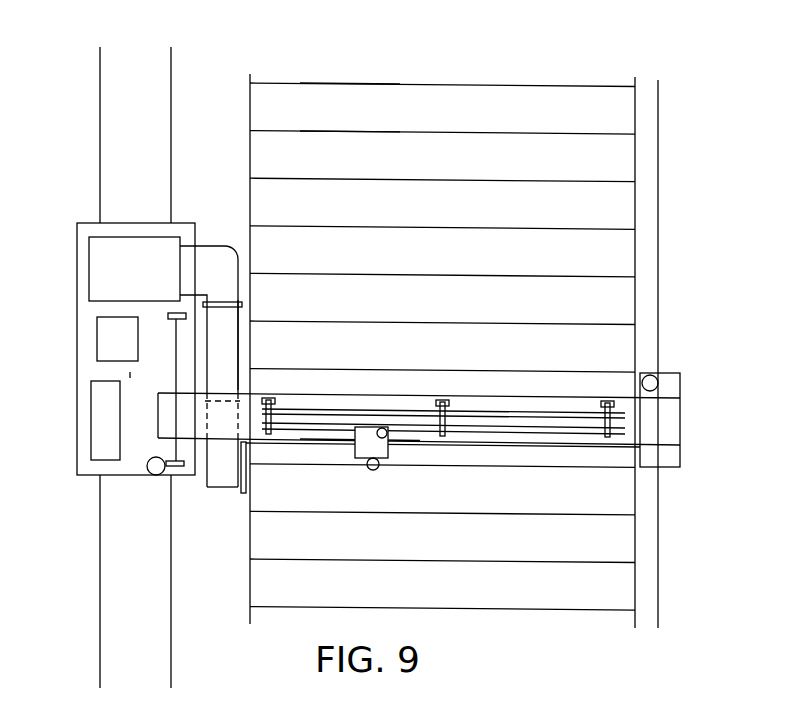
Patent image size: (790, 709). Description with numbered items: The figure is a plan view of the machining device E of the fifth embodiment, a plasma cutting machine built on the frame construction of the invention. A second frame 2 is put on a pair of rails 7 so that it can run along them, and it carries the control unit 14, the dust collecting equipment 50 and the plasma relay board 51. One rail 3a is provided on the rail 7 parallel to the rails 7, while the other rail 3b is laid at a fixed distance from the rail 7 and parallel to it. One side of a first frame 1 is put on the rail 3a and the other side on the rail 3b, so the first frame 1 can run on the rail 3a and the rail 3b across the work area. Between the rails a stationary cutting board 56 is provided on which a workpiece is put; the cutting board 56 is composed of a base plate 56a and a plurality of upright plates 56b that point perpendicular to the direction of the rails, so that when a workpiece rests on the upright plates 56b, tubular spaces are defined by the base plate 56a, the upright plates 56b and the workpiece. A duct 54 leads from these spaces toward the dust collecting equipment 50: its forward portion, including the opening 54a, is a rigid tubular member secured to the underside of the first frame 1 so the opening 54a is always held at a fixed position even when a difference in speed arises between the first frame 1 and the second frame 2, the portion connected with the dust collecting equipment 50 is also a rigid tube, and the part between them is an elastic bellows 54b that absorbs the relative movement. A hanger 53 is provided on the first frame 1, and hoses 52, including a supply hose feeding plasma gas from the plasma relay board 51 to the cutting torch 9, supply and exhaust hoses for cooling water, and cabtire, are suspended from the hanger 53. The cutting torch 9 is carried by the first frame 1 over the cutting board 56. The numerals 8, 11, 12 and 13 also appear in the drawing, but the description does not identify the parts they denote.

The first frame 1 is at (692, 419).
The second frame 2 is at (83, 388).
The rail 3a is at (175, 373).
The rail 3b is at (658, 597).
The rails 7 is at (170, 75).
The guide rail 8 is at (352, 447).
The cutting torch 9 is at (376, 469).
The roller 11 is at (653, 380).
The roller 12 is at (158, 475).
The roller 13 is at (388, 447).
The control unit 14 is at (100, 435).
The dust collecting equipment 50 is at (102, 275).
The plasma relay board 51 is at (110, 337).
The hoses 52 is at (366, 438).
The hanger 53 is at (508, 405).
The duct 54 is at (217, 228).
The opening 54a is at (228, 488).
The elastic bellows 54b is at (233, 347).
The stationary cutting board 56 is at (516, 74).
The base plate 56a is at (328, 93).
The upright plates 56b is at (387, 84).
The machining device E is at (70, 245).